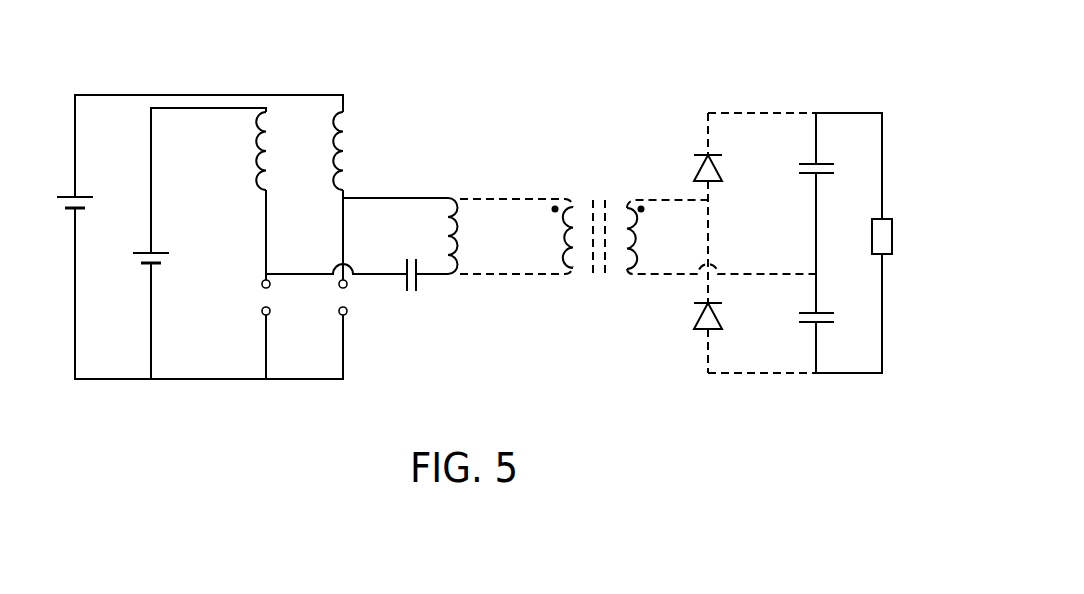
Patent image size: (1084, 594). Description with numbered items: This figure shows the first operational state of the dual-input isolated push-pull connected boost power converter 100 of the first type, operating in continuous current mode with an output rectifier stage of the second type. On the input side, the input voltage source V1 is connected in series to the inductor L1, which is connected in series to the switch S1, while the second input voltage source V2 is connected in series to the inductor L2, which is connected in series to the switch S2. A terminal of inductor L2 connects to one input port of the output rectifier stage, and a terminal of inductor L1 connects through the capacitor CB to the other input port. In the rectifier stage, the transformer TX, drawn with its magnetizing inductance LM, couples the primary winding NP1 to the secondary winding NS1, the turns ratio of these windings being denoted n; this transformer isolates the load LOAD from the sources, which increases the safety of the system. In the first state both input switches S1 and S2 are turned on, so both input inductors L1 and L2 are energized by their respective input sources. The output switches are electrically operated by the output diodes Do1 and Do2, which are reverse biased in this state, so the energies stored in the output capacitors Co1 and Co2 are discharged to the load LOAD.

The dual-input isolated push-pull connected boost power converter 100 is at (478, 193).
The input voltage source V1 is at (191, 279).
The second input voltage source V2 is at (115, 224).
The inductor L1 is at (166, 187).
The inductor L2 is at (360, 95).
The switch S1 is at (254, 298).
The switch S2 is at (332, 298).
The capacitor CB is at (390, 305).
The magnetizing inductance LM is at (465, 210).
The winding NP1 is at (516, 236).
The transformer TX is at (600, 221).
The winding NS1 is at (721, 237).
The output diode Do1 is at (691, 208).
The output diode Do2 is at (691, 337).
The output capacitor Co1 is at (780, 188).
The output capacitor Co2 is at (780, 337).
The load LOAD is at (907, 236).